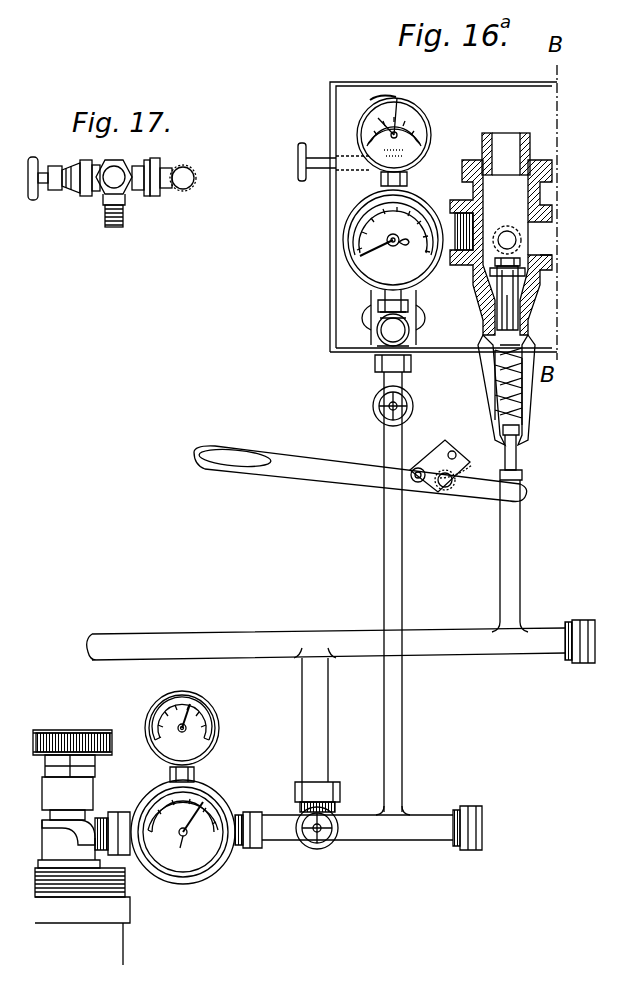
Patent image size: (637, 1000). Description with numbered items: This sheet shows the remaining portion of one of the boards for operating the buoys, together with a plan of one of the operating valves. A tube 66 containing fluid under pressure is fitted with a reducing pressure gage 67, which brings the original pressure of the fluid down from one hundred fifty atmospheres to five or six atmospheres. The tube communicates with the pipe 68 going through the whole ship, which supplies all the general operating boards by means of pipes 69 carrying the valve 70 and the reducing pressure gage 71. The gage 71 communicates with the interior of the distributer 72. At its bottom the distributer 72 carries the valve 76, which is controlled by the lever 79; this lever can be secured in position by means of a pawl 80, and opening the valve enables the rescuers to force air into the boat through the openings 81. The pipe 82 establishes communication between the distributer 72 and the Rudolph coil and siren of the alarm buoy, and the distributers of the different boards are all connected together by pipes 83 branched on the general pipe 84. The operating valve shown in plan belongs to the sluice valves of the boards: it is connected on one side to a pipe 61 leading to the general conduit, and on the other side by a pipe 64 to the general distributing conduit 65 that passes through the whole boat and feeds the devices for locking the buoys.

In FIG. 17, the pipe 61 is at (197, 178).
In FIG. 17, the pipe 64 is at (121, 186).
In FIG. 17, the general distributing conduit 65 is at (66, 186).
In FIG. 16A, the tube 66 is at (81, 847).
In FIG. 16A, the reducing pressure gage 67 is at (214, 742).
In FIG. 16A, the pipe 68 is at (368, 838).
In FIG. 16A, the pipe 69 is at (404, 706).
In FIG. 16A, the valve 70 is at (372, 410).
In FIG. 16A, the reducing pressure gage 71 is at (358, 122).
In FIG. 16A, the distributer 72 is at (528, 262).
In FIG. 16A, the valve 76 is at (496, 292).
In FIG. 16A, the lever 79 is at (326, 478).
In FIG. 16A, the pawl 80 is at (440, 455).
In FIG. 16A, the openings 81 is at (482, 340).
In FIG. 16A, the pipe 82 is at (500, 150).
In FIG. 16A, the pipe 83 is at (508, 538).
In FIG. 16A, the general pipe 84 is at (245, 640).